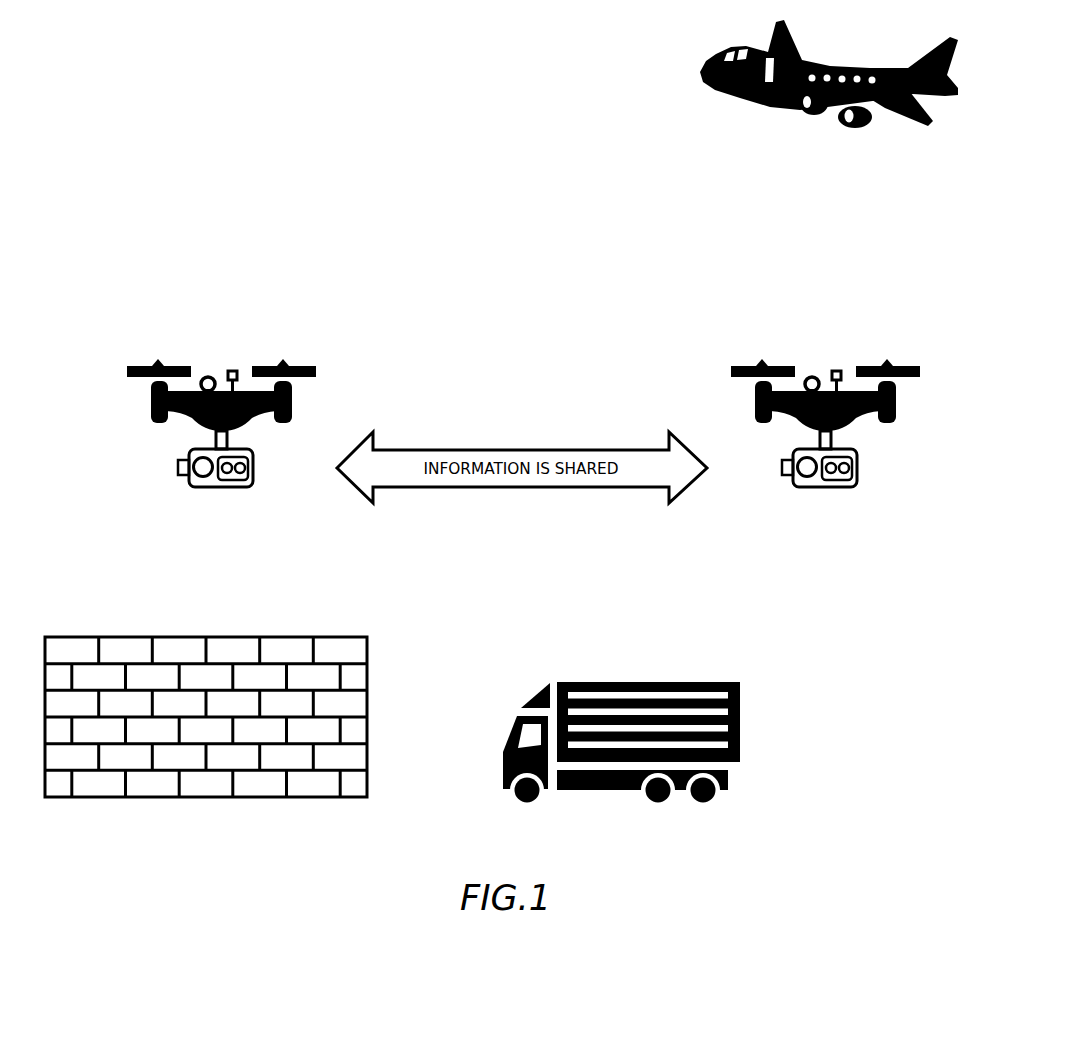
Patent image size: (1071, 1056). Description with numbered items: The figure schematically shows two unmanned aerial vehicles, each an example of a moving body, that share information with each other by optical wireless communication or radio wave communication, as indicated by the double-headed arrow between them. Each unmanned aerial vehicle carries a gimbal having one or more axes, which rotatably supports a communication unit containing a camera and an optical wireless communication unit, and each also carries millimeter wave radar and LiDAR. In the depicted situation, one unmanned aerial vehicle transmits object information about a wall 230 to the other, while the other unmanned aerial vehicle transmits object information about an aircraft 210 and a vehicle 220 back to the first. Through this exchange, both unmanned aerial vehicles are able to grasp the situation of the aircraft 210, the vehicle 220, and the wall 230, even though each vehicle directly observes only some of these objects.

The aircraft 210 is at (834, 63).
The vehicle 220 is at (706, 682).
The wall 230 is at (338, 636).